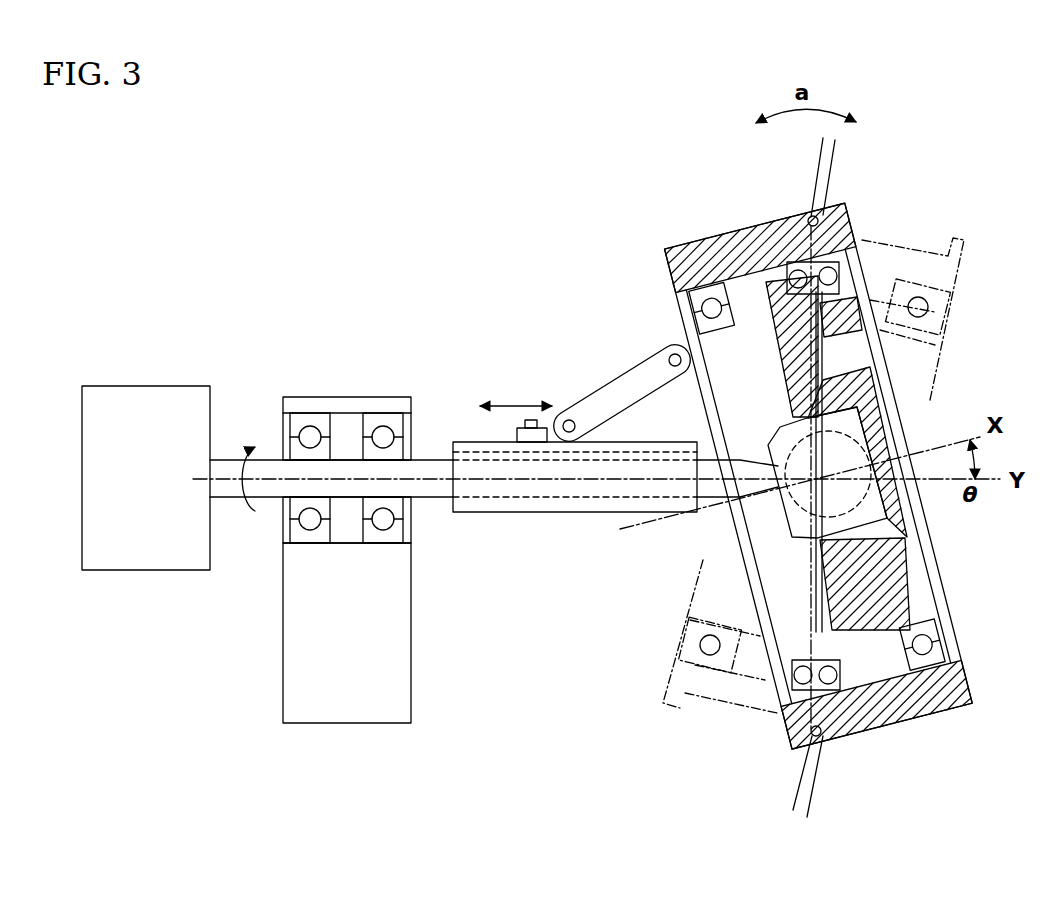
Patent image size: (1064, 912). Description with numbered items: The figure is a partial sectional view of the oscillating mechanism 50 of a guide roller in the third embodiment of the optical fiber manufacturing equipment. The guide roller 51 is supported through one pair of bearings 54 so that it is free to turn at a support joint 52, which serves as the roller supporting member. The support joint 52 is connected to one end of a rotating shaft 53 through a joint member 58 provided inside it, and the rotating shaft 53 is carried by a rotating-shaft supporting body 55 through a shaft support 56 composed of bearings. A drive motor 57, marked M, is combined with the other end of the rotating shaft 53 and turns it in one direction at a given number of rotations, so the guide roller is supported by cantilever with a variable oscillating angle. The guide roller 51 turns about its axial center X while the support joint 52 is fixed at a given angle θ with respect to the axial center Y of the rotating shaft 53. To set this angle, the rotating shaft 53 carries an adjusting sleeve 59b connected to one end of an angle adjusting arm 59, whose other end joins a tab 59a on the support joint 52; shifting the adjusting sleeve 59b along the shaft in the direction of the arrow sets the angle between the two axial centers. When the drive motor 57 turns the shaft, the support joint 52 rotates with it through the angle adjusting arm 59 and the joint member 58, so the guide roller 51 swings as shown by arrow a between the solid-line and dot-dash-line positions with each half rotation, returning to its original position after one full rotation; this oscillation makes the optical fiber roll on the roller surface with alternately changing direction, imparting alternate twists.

The oscillating mechanism 50 is at (505, 315).
The guide roller 51 is at (785, 454).
The support joint 52 is at (867, 393).
The rotating shaft 53 is at (420, 490).
The bearings 54 is at (853, 253).
The rotating-shaft supporting body 55 is at (298, 617).
The shaft support 56 is at (307, 422).
The drive motor 57 is at (132, 402).
The joint member 58 is at (785, 440).
The angle adjusting arm 59 is at (616, 361).
The tab 59a is at (670, 337).
The adjusting sleeve 59b is at (553, 503).